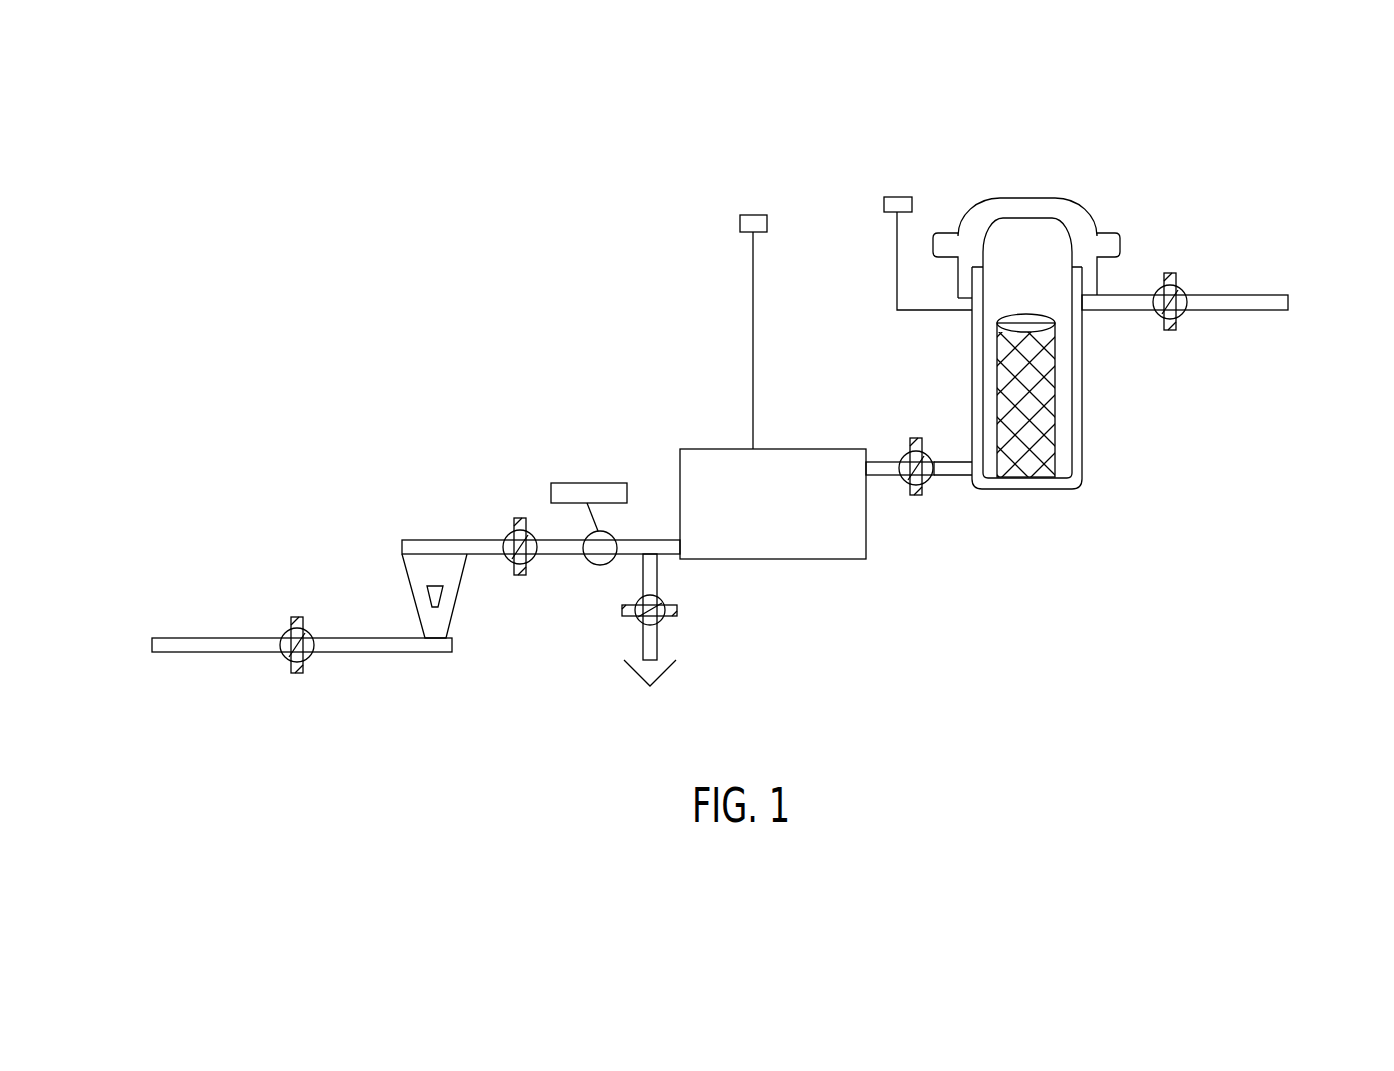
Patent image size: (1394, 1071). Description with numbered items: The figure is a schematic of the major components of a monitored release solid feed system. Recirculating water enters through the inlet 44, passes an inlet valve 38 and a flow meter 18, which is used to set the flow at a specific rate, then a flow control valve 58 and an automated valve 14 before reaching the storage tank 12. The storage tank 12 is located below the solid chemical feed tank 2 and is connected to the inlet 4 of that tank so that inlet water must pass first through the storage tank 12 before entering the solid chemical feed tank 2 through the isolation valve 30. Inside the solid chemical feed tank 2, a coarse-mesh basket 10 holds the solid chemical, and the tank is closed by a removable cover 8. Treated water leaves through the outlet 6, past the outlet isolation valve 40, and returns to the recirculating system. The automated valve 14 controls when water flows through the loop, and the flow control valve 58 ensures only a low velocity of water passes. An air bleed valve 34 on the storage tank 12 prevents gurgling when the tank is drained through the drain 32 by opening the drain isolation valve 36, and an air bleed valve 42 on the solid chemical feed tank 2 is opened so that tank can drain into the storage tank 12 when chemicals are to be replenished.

The solid chemical feed tank 2 is at (1083, 455).
The inlet 4 is at (970, 455).
The outlet 6 is at (1290, 298).
The removable cover 8 is at (1085, 210).
The coarse-mesh basket 10 is at (1058, 370).
The storage tank 12 is at (780, 573).
The automated valve 14 is at (585, 470).
The flow meter 18 is at (458, 622).
The isolation valve 30 is at (915, 505).
The drain 32 is at (650, 686).
The air bleed valve 34 is at (756, 215).
The drain isolation valve 36 is at (625, 610).
The inlet valve 38 is at (270, 668).
The outlet isolation valve 40 is at (1180, 322).
The air bleed valve 42 is at (890, 196).
The inlet 44 is at (120, 660).
The flow control valve 58 is at (521, 512).